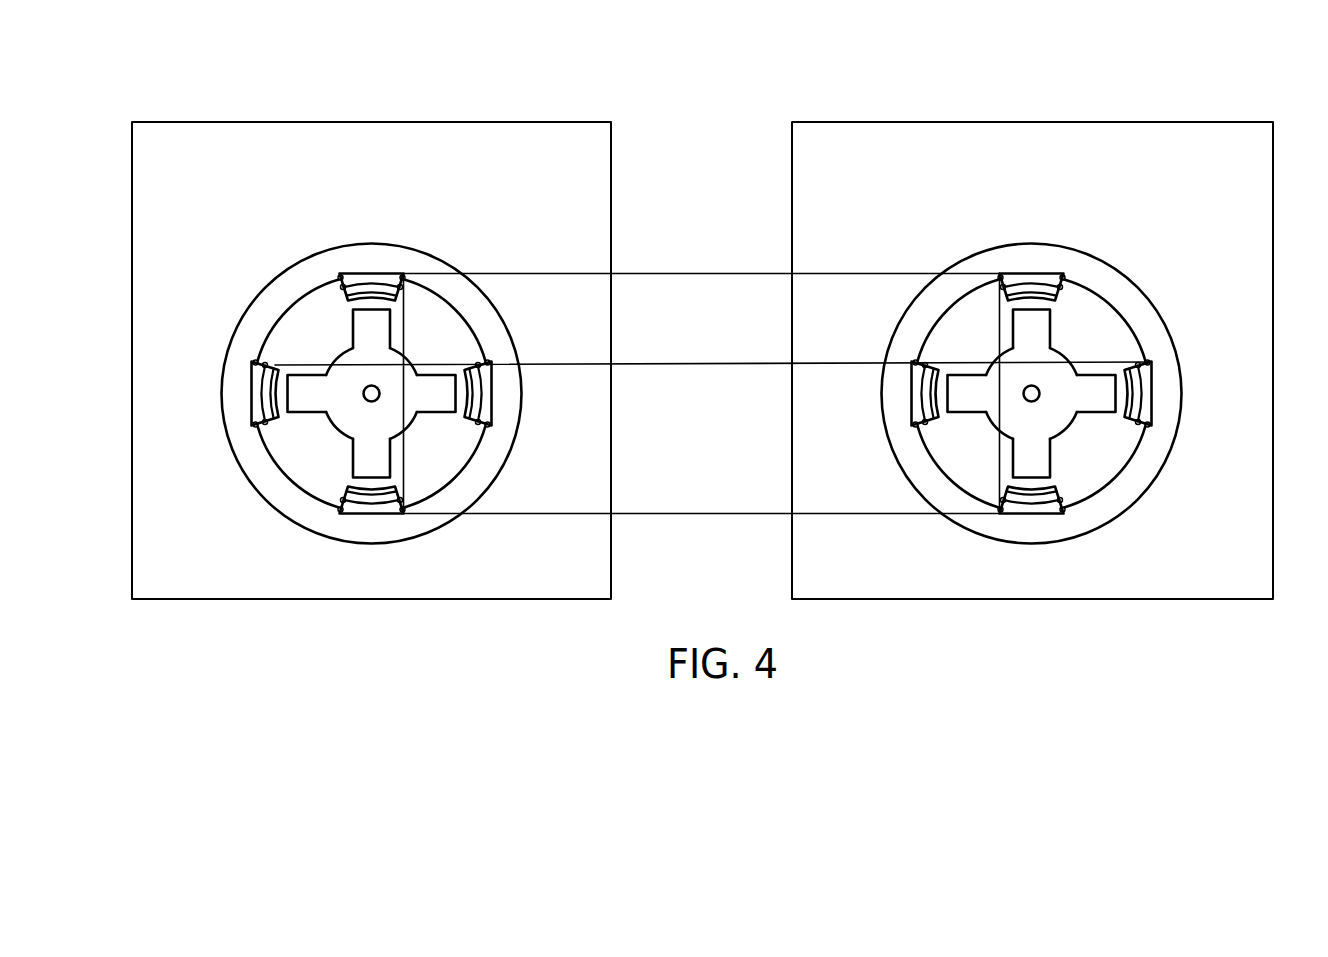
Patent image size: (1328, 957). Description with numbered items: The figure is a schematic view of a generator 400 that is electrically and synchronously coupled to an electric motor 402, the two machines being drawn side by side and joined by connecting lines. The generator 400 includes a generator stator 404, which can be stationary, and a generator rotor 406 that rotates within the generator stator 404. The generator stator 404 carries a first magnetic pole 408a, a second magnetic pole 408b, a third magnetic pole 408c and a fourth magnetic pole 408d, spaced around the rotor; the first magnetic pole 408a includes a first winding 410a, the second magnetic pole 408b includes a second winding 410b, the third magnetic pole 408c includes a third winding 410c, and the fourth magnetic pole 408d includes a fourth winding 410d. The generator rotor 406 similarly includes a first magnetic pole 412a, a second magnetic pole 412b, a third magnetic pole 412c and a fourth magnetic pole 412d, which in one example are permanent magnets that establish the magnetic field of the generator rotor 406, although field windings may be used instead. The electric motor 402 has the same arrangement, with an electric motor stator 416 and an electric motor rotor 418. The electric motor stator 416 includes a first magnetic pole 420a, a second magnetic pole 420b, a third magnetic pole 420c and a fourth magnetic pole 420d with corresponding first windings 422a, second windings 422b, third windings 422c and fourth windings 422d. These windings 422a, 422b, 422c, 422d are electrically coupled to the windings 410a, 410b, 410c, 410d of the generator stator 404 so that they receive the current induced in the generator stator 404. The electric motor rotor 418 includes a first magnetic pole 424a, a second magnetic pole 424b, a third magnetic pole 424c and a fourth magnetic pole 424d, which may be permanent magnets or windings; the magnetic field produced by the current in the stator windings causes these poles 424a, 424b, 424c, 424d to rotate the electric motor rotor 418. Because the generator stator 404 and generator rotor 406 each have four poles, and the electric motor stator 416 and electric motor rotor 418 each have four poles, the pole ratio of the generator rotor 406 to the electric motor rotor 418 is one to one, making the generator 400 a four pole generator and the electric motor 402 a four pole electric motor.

The generator 400 is at (492, 98).
The electric motor 402 is at (1152, 98).
The generator stator 404 is at (279, 271).
The generator rotor 406 is at (383, 377).
The first magnetic pole 408a is at (368, 273).
The second magnetic pole 408b is at (490, 403).
The third magnetic pole 408c is at (367, 513).
The fourth magnetic pole 408d is at (258, 402).
The first winding 410a is at (337, 275).
The second winding 410b is at (488, 423).
The third winding 410c is at (406, 514).
The fourth winding 410d is at (253, 425).
The first magnetic pole 412a is at (365, 337).
The second magnetic pole 412b is at (423, 393).
The third magnetic pole 412c is at (363, 448).
The fourth magnetic pole 412d is at (318, 393).
The electric motor stator 416 is at (1124, 272).
The electric motor rotor 418 is at (1043, 377).
The first magnetic pole 420a is at (1032, 278).
The second magnetic pole 420b is at (1147, 405).
The third magnetic pole 420c is at (1032, 510).
The fourth magnetic pole 420d is at (913, 405).
The first windings 422a is at (1062, 272).
The second windings 422b is at (1150, 425).
The third windings 422c is at (1067, 514).
The fourth windings 422d is at (912, 425).
The first magnetic pole 424a is at (1025, 337).
The second magnetic pole 424b is at (1083, 393).
The third magnetic pole 424c is at (1038, 448).
The fourth magnetic pole 424d is at (978, 393).